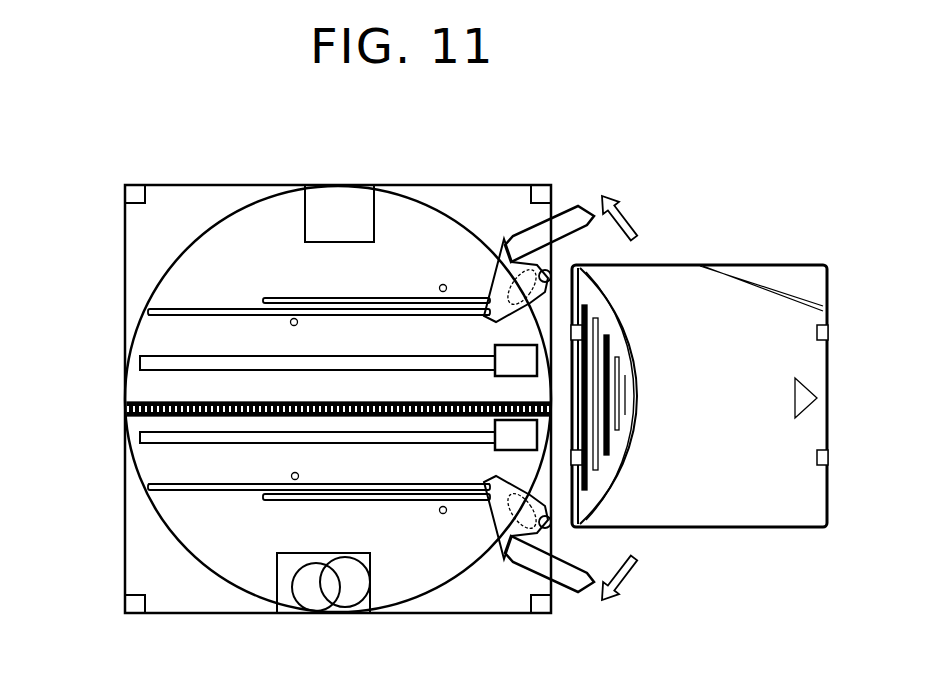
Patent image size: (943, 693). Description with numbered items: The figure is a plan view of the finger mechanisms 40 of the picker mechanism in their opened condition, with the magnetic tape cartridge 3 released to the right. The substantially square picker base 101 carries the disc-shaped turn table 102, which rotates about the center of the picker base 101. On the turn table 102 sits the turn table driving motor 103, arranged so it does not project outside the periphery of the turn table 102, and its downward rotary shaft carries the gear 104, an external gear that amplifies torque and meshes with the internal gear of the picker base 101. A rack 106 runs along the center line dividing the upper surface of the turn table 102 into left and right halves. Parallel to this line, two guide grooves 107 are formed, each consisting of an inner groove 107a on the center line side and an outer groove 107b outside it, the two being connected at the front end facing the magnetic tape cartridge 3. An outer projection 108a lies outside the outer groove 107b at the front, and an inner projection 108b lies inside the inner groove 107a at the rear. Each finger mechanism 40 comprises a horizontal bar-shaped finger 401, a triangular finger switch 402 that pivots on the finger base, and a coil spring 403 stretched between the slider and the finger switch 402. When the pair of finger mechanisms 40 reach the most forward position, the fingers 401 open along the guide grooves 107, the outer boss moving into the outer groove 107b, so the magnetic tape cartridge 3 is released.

The magnetic tape cartridge 3 is at (772, 263).
The finger mechanism 40 is at (542, 400).
The finger 401 is at (564, 206).
The finger switch 402 is at (517, 222).
The coil spring 403 is at (490, 300).
The picker base 101 is at (146, 236).
The turn table 102 is at (183, 540).
The turn table driving motor 103 is at (345, 607).
The gear 104 is at (297, 607).
The rack 106 is at (160, 401).
The guide groove 107 is at (190, 300).
The inner groove 107a is at (222, 315).
The outer groove 107b is at (284, 299).
The outer projection 108a is at (443, 284).
The inner projection 108b is at (290, 322).